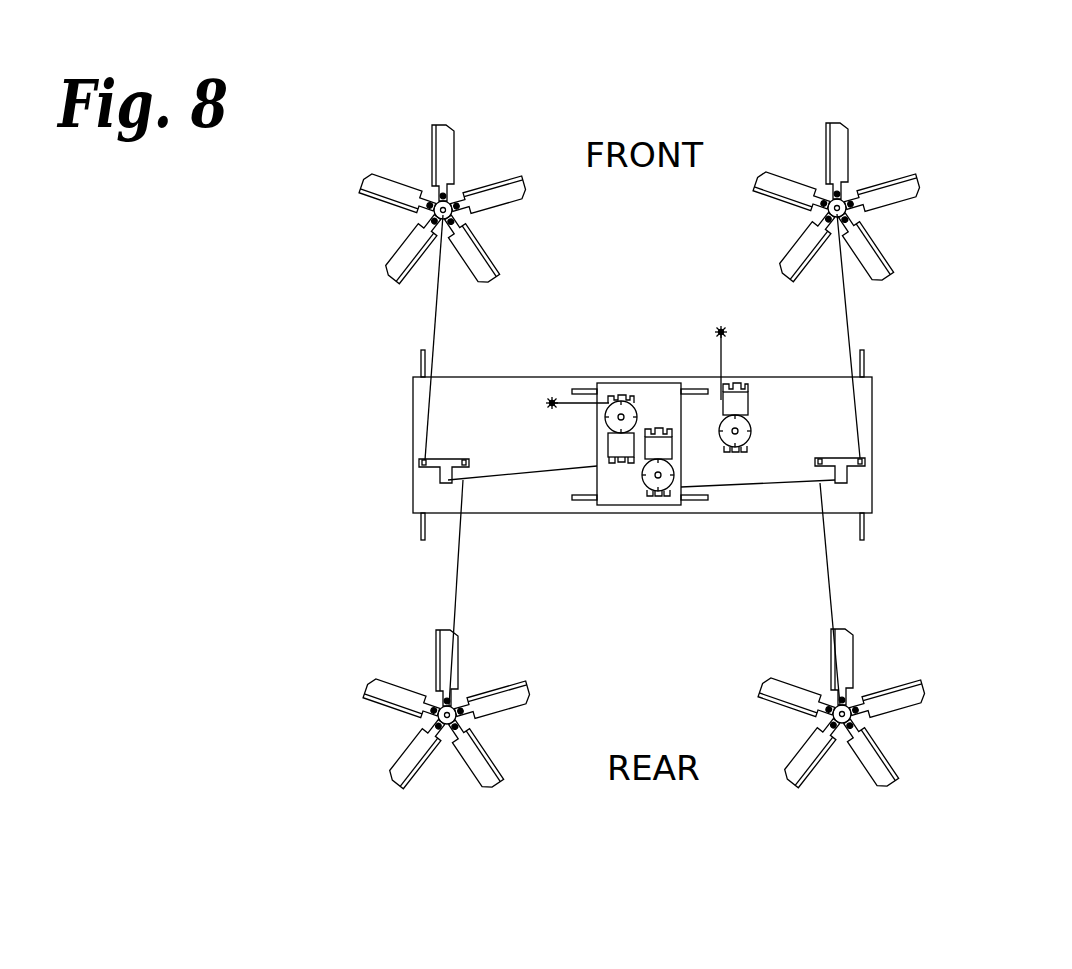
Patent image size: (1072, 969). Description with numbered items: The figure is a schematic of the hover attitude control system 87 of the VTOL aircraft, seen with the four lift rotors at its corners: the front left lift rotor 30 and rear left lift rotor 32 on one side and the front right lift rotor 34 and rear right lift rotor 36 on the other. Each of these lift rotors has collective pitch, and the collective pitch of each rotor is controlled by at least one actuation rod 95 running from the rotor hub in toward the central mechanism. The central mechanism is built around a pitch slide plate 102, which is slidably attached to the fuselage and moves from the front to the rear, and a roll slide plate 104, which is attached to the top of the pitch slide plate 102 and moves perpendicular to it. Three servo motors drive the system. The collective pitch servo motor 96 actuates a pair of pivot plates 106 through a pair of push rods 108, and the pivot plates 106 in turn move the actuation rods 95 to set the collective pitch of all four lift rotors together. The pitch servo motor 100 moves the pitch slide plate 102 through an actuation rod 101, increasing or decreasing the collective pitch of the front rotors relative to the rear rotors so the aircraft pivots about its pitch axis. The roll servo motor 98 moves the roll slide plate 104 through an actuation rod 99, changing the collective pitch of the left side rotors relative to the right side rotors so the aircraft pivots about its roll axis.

The front left lift rotor 30 is at (385, 240).
The rear left lift rotor 32 is at (385, 680).
The front right lift rotor 34 is at (885, 152).
The rear right lift rotor 36 is at (895, 738).
The hover attitude control system 87 is at (925, 328).
The actuation rods 95 is at (437, 330).
The collective pitch servo motor 96 is at (641, 487).
The roll servo motor 98 is at (642, 403).
The actuation rod 99 is at (563, 378).
The pitch servo motor 100 is at (752, 412).
The actuation rod 101 is at (715, 361).
The pitch slide plate 102 is at (520, 515).
The roll slide plate 104 is at (665, 378).
The pivot plates 106 is at (443, 478).
The push rods 108 is at (763, 488).